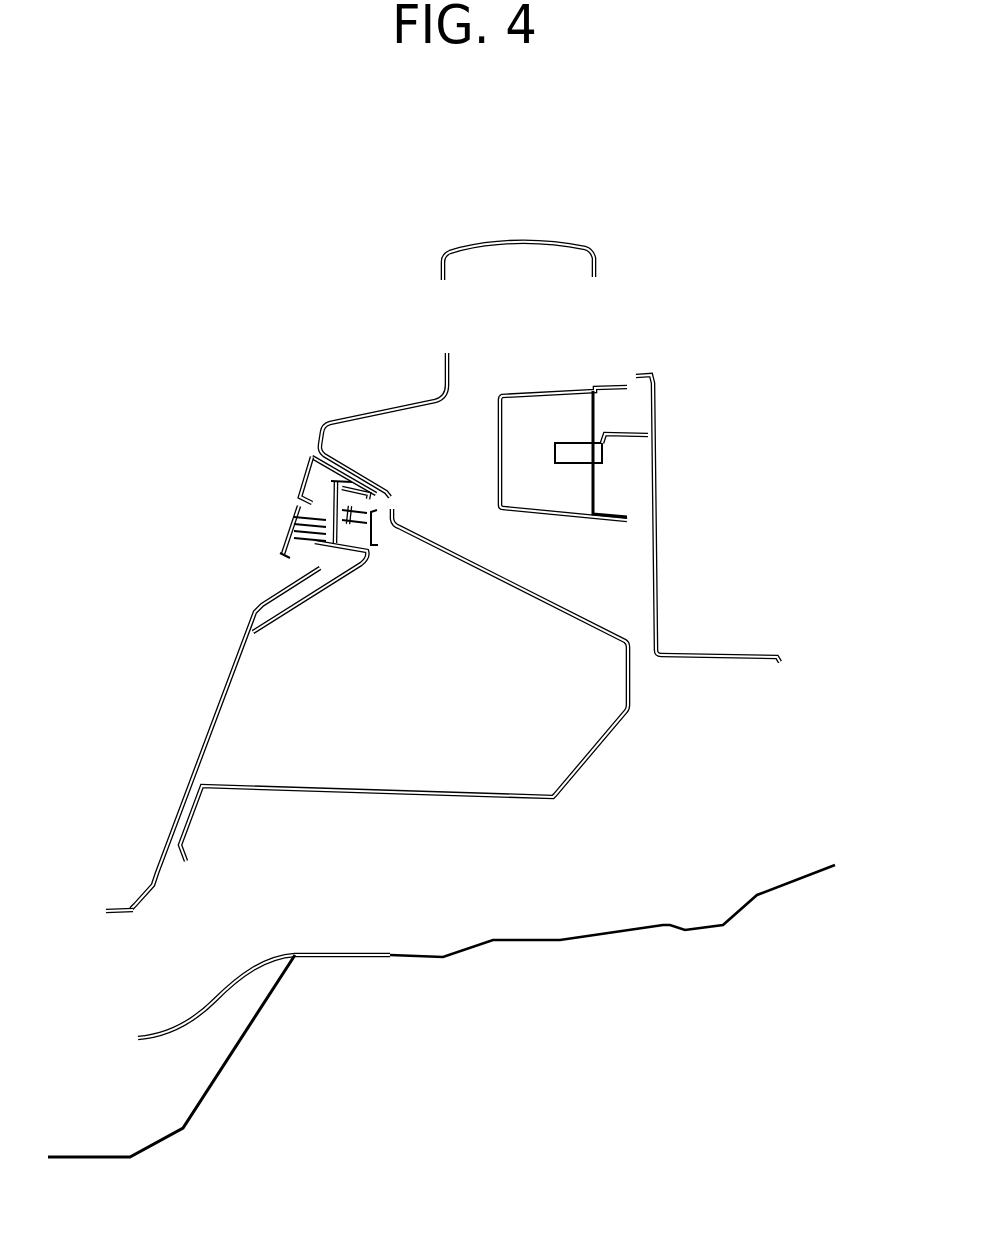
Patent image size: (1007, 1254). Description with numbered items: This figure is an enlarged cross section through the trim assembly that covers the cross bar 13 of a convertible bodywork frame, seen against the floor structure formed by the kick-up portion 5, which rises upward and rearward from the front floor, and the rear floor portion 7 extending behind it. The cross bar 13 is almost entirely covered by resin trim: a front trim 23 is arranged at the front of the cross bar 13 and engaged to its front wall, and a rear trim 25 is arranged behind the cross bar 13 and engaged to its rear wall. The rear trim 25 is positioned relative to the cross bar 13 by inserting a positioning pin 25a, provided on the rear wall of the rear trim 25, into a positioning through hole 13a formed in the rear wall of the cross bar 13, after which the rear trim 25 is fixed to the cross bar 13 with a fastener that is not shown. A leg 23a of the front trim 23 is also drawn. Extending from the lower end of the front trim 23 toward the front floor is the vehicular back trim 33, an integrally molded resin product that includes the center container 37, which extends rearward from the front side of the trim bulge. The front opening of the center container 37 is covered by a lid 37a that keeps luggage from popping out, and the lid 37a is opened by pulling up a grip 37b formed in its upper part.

The kick-up portion 5 is at (220, 1075).
The rear floor portion 7 is at (578, 938).
The cross bar 13 is at (538, 390).
The positioning through hole 13a is at (590, 460).
The front trim 23 is at (470, 247).
The leg portion of cover member 23a is at (412, 400).
The rear trim 25 is at (563, 243).
The positioning pin 25a is at (574, 443).
The vehicular back trim 33 is at (122, 907).
The center container 37 is at (590, 753).
The lid 37a is at (217, 710).
The grip 37b is at (283, 532).